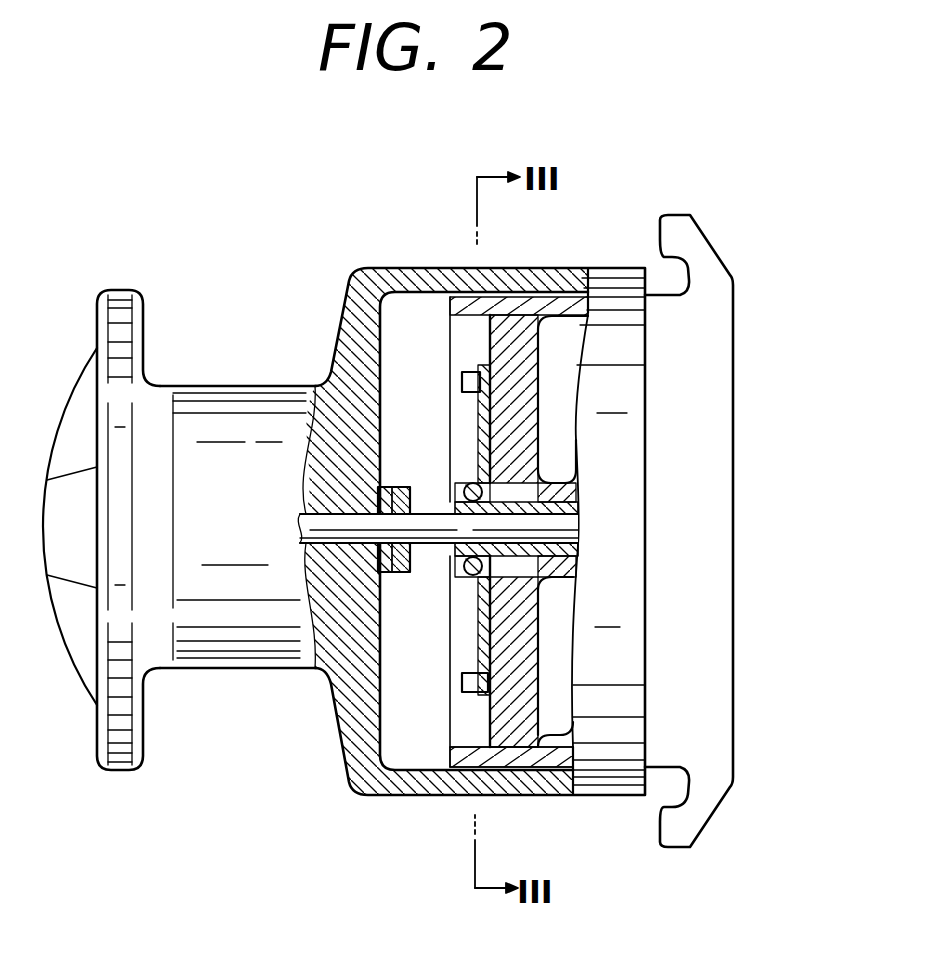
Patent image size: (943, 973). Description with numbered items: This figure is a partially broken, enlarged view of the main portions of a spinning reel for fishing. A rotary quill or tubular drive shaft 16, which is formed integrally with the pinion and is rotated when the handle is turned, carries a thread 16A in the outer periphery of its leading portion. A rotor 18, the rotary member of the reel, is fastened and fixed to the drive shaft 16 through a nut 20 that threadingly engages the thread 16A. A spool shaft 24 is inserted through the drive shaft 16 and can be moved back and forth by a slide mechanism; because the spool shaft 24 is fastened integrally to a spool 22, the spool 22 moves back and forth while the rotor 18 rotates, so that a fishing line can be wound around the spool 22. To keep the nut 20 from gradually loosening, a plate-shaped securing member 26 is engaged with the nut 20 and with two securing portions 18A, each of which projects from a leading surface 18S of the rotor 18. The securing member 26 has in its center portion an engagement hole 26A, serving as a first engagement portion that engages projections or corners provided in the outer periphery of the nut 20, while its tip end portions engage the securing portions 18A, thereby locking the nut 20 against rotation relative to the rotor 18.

The drive shaft 16 is at (566, 478).
The thread 16A is at (462, 483).
The rotor 18 is at (530, 410).
The securing portions 18A is at (458, 374).
The leading surface 18S is at (458, 296).
The nut 20 is at (455, 577).
The spool 22 is at (222, 405).
The spool shaft 24 is at (350, 535).
The securing member 26 is at (480, 622).
The engagement hole 26A is at (547, 633).